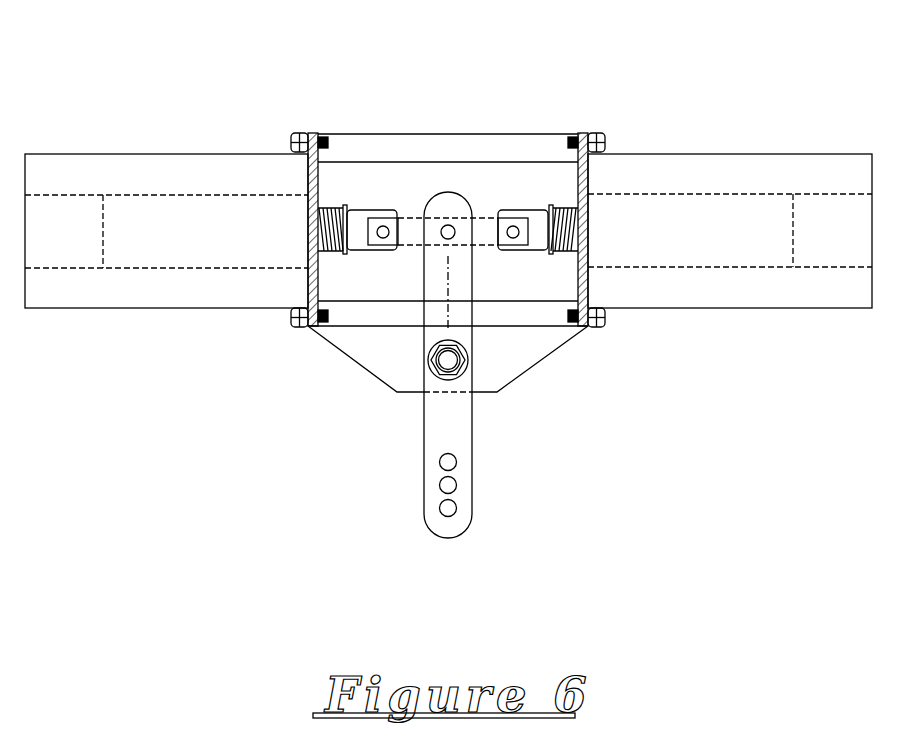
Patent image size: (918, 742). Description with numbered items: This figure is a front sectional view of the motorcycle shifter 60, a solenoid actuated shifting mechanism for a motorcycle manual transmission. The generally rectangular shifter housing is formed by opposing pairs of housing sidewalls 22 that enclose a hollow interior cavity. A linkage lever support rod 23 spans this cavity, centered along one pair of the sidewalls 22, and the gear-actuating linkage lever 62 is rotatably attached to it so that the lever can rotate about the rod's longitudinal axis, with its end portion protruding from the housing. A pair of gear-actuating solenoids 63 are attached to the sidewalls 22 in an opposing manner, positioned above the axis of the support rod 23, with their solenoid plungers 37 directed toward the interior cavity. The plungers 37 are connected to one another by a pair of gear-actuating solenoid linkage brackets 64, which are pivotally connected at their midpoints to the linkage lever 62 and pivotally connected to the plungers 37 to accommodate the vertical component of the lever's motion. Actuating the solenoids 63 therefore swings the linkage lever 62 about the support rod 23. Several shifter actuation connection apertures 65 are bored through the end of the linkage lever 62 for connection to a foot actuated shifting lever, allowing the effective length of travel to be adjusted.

The motorcycle shifter 60 is at (146, 70).
The housing sidewalls 22 is at (308, 175).
The solenoid plungers 37 is at (345, 207).
The gear-actuating solenoids 63 is at (153, 292).
The gear-actuating solenoid linkage brackets 64 is at (410, 238).
The linkage lever support rod 23 is at (458, 369).
The gear-actuating linkage lever 62 is at (460, 432).
The shifter actuation connection apertures 65 is at (440, 507).